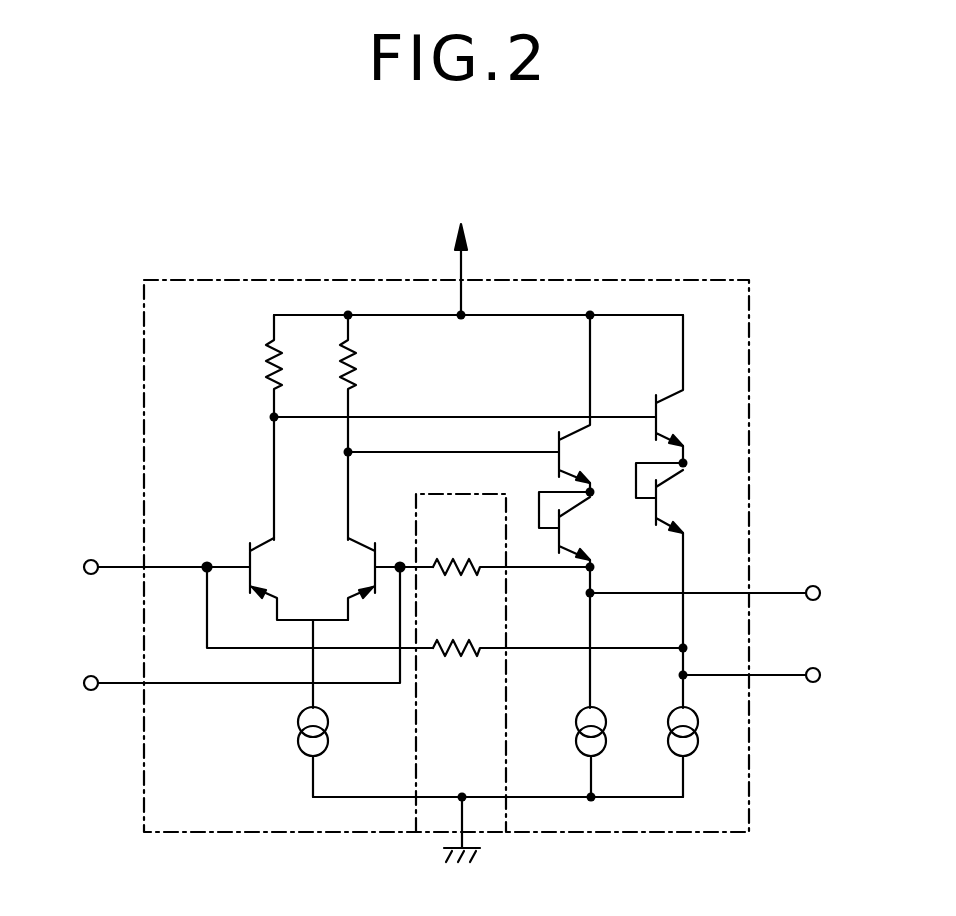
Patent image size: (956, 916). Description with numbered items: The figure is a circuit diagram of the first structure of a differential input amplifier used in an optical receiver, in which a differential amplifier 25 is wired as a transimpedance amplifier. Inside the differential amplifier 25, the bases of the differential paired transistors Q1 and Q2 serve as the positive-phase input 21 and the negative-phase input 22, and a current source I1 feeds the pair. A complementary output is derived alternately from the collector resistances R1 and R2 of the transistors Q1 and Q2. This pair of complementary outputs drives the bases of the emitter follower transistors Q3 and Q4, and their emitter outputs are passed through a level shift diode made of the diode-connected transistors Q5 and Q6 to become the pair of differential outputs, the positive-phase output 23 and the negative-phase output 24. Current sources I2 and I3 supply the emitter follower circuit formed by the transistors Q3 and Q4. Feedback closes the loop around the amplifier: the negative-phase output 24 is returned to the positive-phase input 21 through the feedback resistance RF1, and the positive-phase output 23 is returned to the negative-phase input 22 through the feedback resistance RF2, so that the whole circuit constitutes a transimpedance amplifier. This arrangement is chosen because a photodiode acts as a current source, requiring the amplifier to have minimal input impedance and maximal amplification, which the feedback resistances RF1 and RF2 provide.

The positive-phase input 21 is at (92, 559).
The negative-phase input 22 is at (92, 691).
The positive-phase output 23 is at (814, 584).
The negative-phase output 24 is at (813, 683).
The differential amplifier 25 is at (690, 280).
The collector resistance R1 is at (267, 371).
The collector resistance R2 is at (358, 370).
The feedback resistance RF1 is at (452, 658).
The feedback resistance RF2 is at (455, 561).
The differential paired transistor Q1 is at (264, 543).
The differential paired transistor Q2 is at (365, 562).
The emitter follower transistor Q3 is at (662, 418).
The emitter follower transistor Q4 is at (566, 452).
The level shift diode transistor Q5 is at (662, 500).
The level shift diode transistor Q6 is at (566, 530).
The current source I1 is at (297, 733).
The current source I2 is at (667, 731).
The current source I3 is at (576, 736).